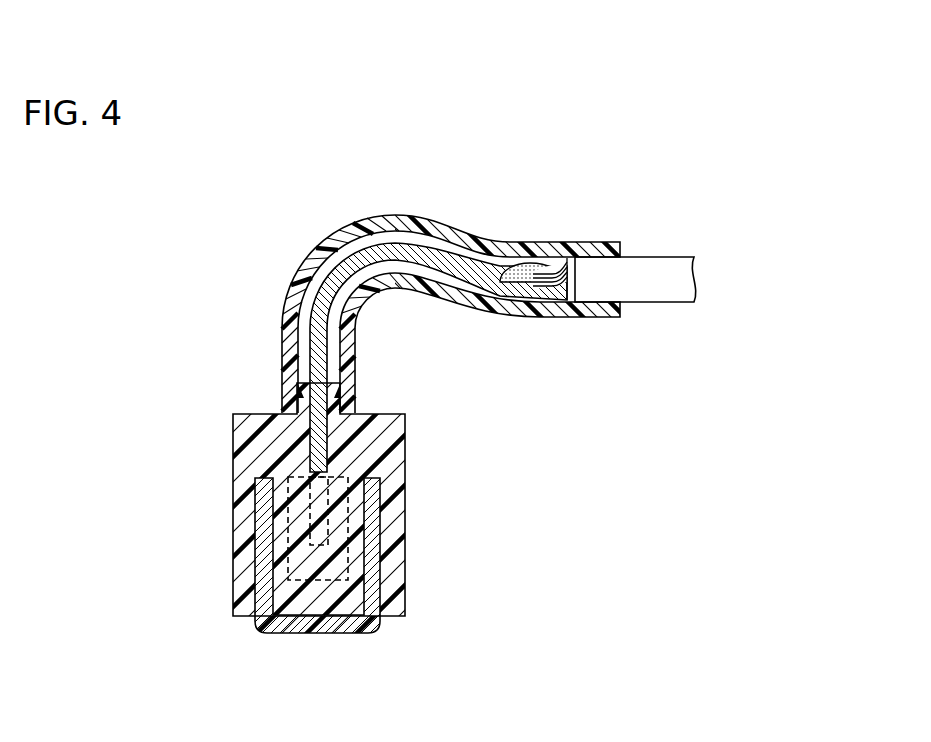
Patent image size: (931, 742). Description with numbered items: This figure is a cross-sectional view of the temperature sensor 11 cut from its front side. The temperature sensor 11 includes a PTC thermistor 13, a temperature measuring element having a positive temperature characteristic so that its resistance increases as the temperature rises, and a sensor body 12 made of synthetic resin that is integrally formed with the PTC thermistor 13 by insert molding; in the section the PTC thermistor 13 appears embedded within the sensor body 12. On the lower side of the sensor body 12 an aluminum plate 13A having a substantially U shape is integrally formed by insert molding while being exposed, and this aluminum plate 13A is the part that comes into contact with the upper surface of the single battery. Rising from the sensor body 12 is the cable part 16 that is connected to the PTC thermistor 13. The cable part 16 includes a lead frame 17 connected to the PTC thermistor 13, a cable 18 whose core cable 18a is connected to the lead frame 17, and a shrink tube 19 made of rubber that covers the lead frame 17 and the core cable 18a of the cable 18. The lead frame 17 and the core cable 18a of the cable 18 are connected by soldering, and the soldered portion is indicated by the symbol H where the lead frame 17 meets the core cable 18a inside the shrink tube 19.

The temperature sensor 11 is at (322, 538).
The sensor body 12 is at (421, 544).
The PTC thermistor 13 is at (348, 568).
The aluminum plate 13A is at (330, 633).
The cable part 16 is at (407, 294).
The lead frame 17 is at (362, 266).
The cable 18 is at (675, 246).
The core cable 18a is at (565, 264).
The shrink tube 19 is at (308, 258).
The soldered portion H is at (528, 262).